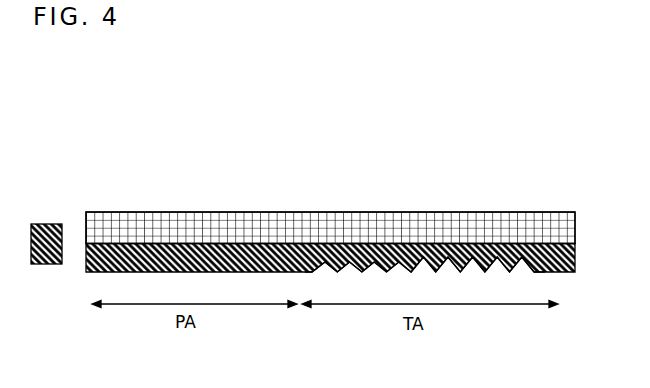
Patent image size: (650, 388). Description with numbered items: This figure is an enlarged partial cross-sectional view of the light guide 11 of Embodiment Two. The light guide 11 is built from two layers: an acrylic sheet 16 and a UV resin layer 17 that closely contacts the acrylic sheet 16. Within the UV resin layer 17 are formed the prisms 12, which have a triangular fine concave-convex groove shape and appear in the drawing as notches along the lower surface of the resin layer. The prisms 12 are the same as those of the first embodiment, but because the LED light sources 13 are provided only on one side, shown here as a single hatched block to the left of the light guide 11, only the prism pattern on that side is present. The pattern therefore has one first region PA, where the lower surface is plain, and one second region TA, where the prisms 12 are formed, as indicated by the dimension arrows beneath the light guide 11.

The light guide 11 is at (330, 177).
The prisms 12 is at (440, 267).
The LED light sources 13 is at (50, 263).
The acrylic sheet 16 is at (212, 224).
The UV resin layer 17 is at (330, 199).